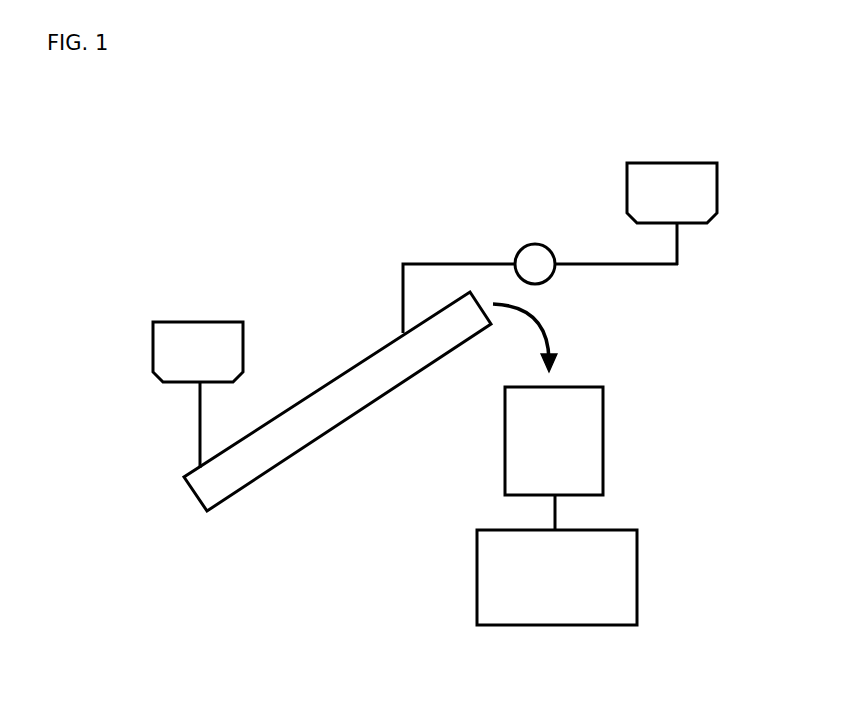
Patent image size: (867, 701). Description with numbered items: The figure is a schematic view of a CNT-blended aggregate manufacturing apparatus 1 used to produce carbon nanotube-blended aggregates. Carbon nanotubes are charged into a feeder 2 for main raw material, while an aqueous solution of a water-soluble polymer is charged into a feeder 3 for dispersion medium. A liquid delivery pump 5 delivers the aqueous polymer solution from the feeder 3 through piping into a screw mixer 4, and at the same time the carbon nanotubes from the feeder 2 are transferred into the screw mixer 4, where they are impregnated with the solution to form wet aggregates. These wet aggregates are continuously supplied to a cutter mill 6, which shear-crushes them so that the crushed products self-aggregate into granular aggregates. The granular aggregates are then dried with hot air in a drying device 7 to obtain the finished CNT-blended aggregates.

The CNT-blended aggregate manufacturing apparatus 1 is at (375, 211).
The feeder for main raw material 2 is at (152, 347).
The feeder for dispersion medium 3 is at (717, 192).
The screw mixer 4 is at (313, 392).
The liquid delivery pump 5 is at (536, 243).
The cutter mill 6 is at (603, 437).
The drying device 7 is at (637, 580).